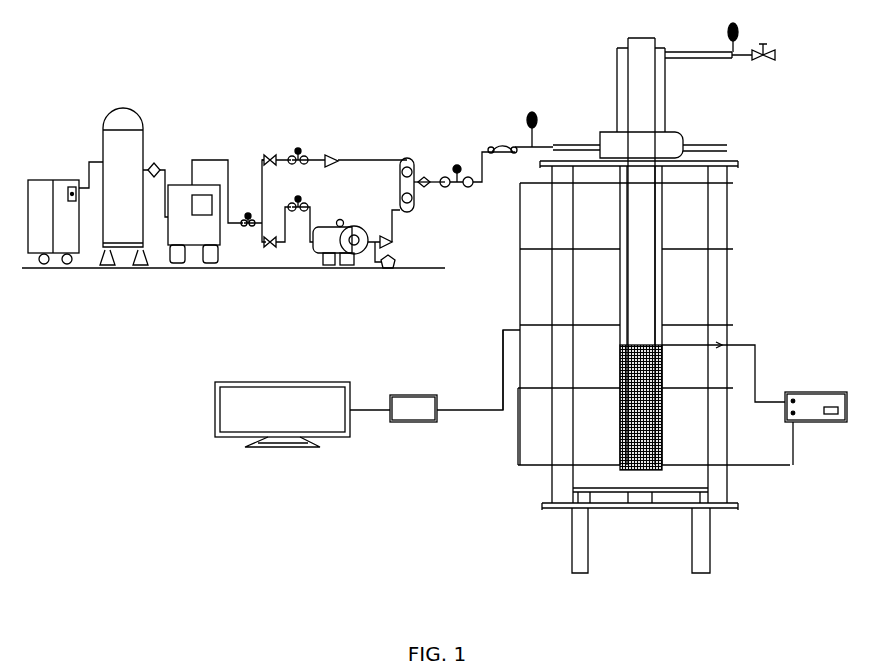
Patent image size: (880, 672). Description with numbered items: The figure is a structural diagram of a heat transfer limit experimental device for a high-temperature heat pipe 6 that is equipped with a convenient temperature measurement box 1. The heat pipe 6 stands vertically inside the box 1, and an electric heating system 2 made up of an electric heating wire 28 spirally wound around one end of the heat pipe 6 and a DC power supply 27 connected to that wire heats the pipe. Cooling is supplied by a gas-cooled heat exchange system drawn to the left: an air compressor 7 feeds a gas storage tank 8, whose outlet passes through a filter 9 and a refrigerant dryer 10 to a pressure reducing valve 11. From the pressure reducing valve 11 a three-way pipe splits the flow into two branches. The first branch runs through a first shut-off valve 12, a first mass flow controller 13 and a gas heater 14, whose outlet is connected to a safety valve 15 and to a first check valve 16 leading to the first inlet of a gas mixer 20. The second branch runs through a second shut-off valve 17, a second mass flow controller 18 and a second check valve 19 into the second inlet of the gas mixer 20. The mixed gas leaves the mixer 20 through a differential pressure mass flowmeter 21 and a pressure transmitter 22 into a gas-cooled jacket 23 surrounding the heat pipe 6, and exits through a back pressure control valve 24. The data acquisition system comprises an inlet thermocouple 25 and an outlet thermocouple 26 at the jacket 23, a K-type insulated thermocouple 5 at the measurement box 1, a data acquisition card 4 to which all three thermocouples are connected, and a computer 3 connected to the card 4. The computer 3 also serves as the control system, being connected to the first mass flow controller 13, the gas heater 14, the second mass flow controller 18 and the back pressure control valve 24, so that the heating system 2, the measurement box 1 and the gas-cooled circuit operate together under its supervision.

The convenient temperature measurement box 1 is at (597, 423).
The electric heating system 2 is at (760, 445).
The computer 3 is at (248, 433).
The data acquisition card 4 is at (412, 405).
The K-type insulated thermocouple 5 is at (517, 415).
The high-temperature heat pipe 6 is at (647, 220).
The air compressor 7 is at (53, 190).
The gas storage tank 8 is at (108, 158).
The filter 9 is at (158, 166).
The refrigerant dryer 10 is at (183, 198).
The pressure reducing valve 11 is at (248, 227).
The first shut-off valve 12 is at (273, 247).
The first mass flow controller 13 is at (299, 211).
The gas heater 14 is at (340, 258).
The safety valve 15 is at (388, 270).
The first check valve 16 is at (393, 240).
The second shut-off valve 17 is at (269, 155).
The second mass flow controller 18 is at (299, 148).
The second check valve 19 is at (333, 153).
The gas mixer 20 is at (405, 157).
The differential pressure mass flowmeter 21 is at (451, 163).
The pressure transmitter 22 is at (505, 137).
The gas-cooled jacket 23 is at (612, 138).
The back pressure control valve 24 is at (767, 60).
The inlet thermocouple 25 is at (533, 112).
The outlet thermocouple 26 is at (737, 42).
The DC power supply 27 is at (807, 413).
The electric heating wire 28 is at (668, 465).